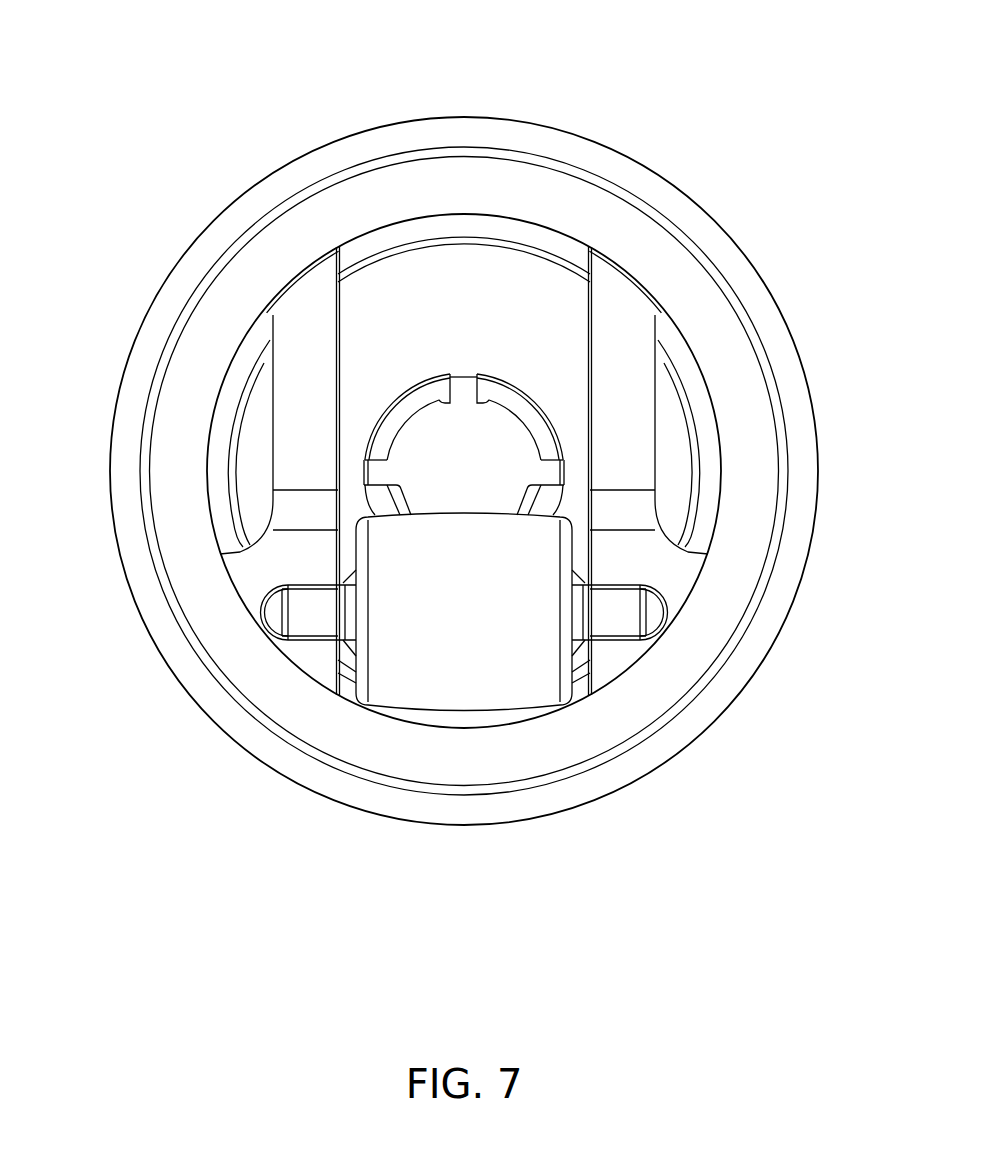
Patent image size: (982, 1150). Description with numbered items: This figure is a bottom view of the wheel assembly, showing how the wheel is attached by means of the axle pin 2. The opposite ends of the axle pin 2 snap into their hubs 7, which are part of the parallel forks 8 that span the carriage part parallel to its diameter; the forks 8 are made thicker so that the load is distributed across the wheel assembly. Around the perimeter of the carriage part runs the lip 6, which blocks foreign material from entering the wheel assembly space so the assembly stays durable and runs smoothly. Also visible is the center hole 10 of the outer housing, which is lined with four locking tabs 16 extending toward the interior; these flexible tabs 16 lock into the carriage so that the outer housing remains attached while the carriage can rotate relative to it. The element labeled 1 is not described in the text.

The elastic clip arm 1 is at (314, 610).
The axle pin 2 is at (463, 608).
The lip 6 is at (688, 725).
The hub 7 is at (267, 610).
The fork 8 is at (300, 363).
The center hole 10 is at (463, 472).
The locking tab 16 is at (398, 415).